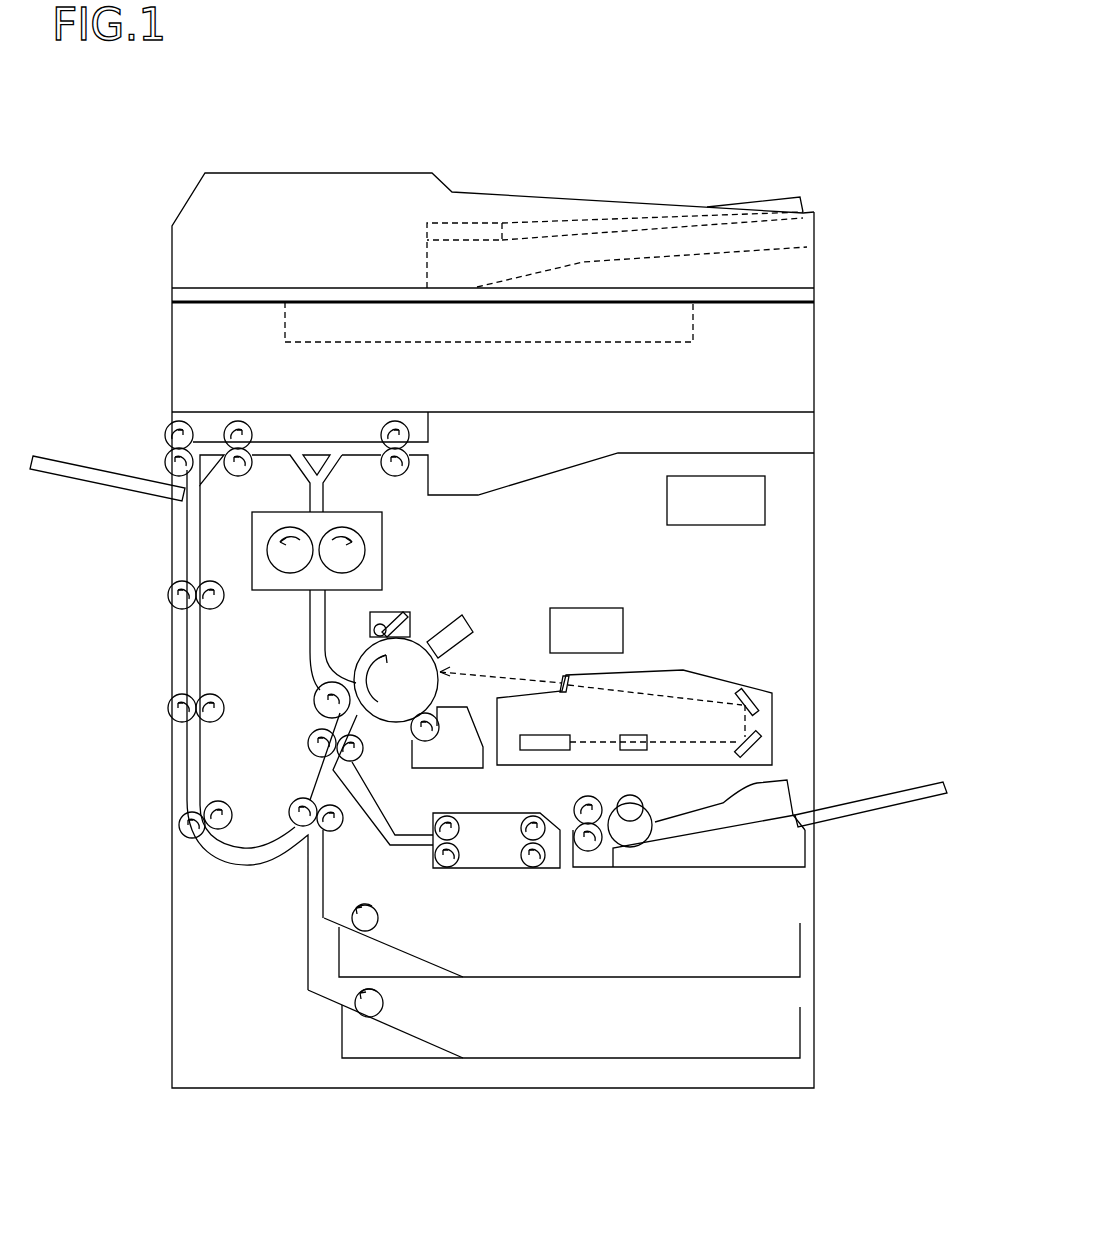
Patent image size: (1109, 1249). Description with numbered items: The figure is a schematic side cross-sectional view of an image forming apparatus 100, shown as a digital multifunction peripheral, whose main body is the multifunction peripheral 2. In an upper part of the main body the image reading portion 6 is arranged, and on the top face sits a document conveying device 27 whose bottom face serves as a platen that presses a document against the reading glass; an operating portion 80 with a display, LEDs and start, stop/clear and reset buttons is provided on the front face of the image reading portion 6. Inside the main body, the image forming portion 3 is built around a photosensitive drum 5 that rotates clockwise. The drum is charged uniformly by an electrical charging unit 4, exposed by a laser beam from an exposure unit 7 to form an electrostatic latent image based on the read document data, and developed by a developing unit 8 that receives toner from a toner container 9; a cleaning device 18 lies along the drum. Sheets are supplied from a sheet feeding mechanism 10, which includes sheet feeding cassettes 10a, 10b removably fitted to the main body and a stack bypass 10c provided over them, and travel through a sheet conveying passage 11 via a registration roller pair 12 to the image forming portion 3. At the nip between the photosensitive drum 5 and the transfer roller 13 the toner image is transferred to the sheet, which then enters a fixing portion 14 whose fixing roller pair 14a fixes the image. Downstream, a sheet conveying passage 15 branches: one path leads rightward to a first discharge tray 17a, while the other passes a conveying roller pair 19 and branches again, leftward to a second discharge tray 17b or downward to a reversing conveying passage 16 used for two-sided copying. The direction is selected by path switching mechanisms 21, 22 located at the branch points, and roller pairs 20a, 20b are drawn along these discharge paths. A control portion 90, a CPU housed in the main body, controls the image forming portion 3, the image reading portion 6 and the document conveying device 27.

The image forming apparatus 100 is at (718, 162).
The multifunction peripheral 2 is at (815, 568).
The document conveying device 27 is at (213, 208).
The image reading portion 6 is at (185, 365).
The operating portion 80 is at (610, 342).
The first discharge tray 17a is at (503, 453).
The second discharge tray 17b is at (82, 468).
The conveyance roller pair 20a is at (402, 437).
The discharge roller pair 20b is at (163, 447).
The conveying roller pair 19 is at (238, 428).
The path switching mechanism 21 is at (312, 455).
The path switching mechanism 22 is at (197, 462).
The sheet conveying passage 15 is at (303, 492).
The fixing portion 14 is at (247, 550).
The fixing roller pair 14a is at (355, 550).
The reversing conveying passage 16 is at (192, 640).
The registration roller pair 12 is at (315, 753).
The transfer roller 13 is at (313, 705).
The image forming portion 3 is at (452, 593).
The photosensitive drum 5 is at (383, 708).
The cleaning device 18 is at (390, 612).
The electrical charging unit 4 is at (460, 635).
The developing unit 8 is at (447, 757).
The toner container 9 is at (588, 620).
The exposure unit 7 is at (662, 682).
The control portion 90 is at (765, 498).
The sheet conveying passage 11 is at (313, 858).
The sheet feeding mechanism 10 is at (628, 957).
The sheet feeding cassette 10a is at (783, 956).
The sheet feeding cassette 10b is at (783, 1041).
The stack bypass 10c is at (843, 800).